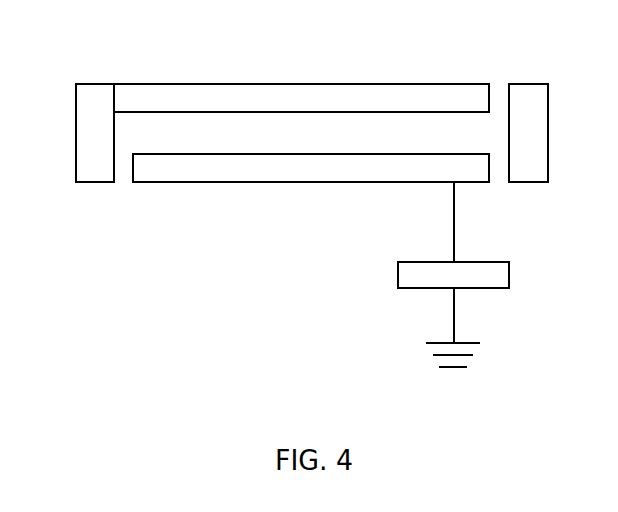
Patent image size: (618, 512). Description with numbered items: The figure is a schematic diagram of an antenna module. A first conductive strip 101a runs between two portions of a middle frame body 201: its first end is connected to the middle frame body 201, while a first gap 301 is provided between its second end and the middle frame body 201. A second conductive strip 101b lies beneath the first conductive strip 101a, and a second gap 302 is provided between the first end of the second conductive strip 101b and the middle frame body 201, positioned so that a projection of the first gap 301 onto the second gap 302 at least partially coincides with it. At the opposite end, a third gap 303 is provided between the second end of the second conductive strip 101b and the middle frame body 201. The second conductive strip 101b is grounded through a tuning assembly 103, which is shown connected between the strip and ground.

The first conductive strip 101a is at (226, 83).
The second conductive strip 101b is at (230, 182).
The middle frame body 201 is at (75, 132).
The first gap 301 is at (500, 102).
The second gap 302 is at (498, 165).
The third gap 303 is at (125, 167).
The tuning assembly 103 is at (397, 275).